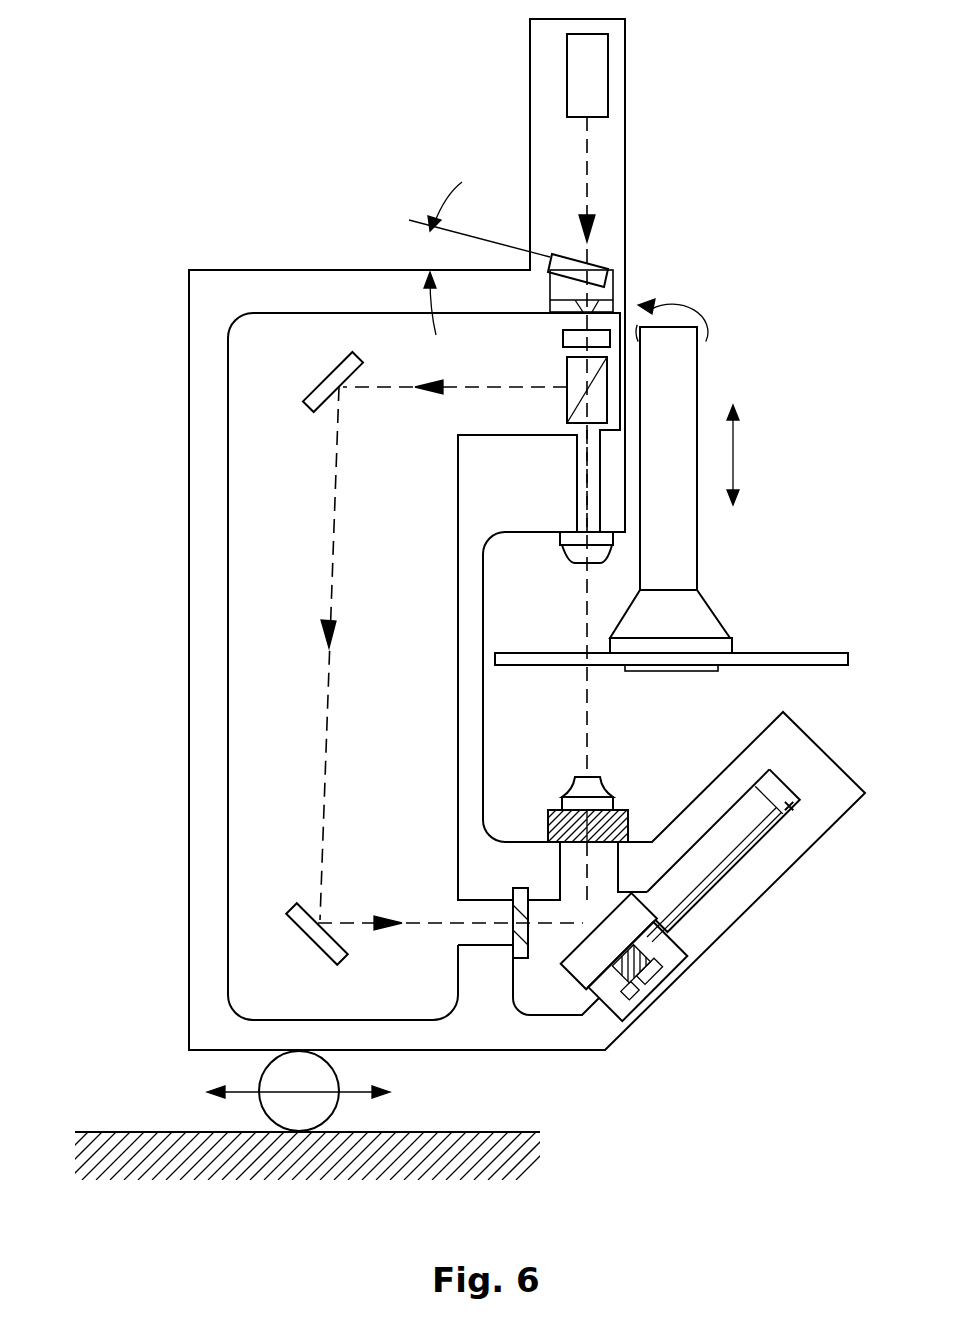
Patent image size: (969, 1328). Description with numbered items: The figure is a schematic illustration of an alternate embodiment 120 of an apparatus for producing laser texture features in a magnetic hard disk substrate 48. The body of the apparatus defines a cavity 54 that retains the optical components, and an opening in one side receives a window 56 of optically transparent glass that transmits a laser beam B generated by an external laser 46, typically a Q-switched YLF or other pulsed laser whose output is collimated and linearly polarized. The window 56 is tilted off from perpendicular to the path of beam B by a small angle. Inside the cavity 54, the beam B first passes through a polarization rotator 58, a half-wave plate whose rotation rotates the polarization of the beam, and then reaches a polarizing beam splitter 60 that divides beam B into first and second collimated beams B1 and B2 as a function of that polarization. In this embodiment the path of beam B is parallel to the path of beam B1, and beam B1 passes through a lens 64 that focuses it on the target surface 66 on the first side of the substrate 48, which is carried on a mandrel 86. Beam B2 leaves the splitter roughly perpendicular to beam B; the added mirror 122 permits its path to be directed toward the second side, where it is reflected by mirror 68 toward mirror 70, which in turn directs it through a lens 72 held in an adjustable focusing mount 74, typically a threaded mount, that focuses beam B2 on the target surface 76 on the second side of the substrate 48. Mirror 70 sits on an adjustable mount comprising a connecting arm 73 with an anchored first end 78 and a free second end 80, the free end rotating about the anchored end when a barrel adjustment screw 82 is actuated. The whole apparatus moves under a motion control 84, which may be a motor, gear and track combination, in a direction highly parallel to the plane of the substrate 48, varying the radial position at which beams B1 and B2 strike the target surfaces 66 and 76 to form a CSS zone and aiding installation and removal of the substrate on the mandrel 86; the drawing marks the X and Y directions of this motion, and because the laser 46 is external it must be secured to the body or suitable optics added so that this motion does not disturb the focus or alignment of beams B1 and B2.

The laser 46 is at (610, 77).
The laser beam B is at (588, 158).
The window 56 is at (607, 263).
The polarization rotator 58 is at (563, 337).
The polarizing beam splitter 60 is at (567, 402).
The mirror 122 is at (327, 378).
The alternate embodiment 120 is at (297, 252).
The first collimated beam B1 is at (585, 503).
The second collimated beam B2 is at (333, 567).
The lens 64 is at (568, 552).
The mandrel 86 is at (715, 613).
The target surface 66 is at (787, 651).
The substrate 48 is at (850, 652).
The cavity 54 is at (267, 693).
The target surface 76 is at (765, 665).
The lens 72 is at (603, 785).
The adjustable focusing mount 74 is at (628, 825).
The anchored first end 78 is at (795, 808).
The connecting arm 73 is at (718, 880).
The mirror 68 is at (290, 905).
The motion control 84 is at (265, 1078).
The mirror 70 is at (557, 950).
The free second end 80 is at (577, 985).
The barrel adjustment screw 82 is at (637, 997).
The X direction X is at (743, 455).
The Y direction Y is at (311, 1096).